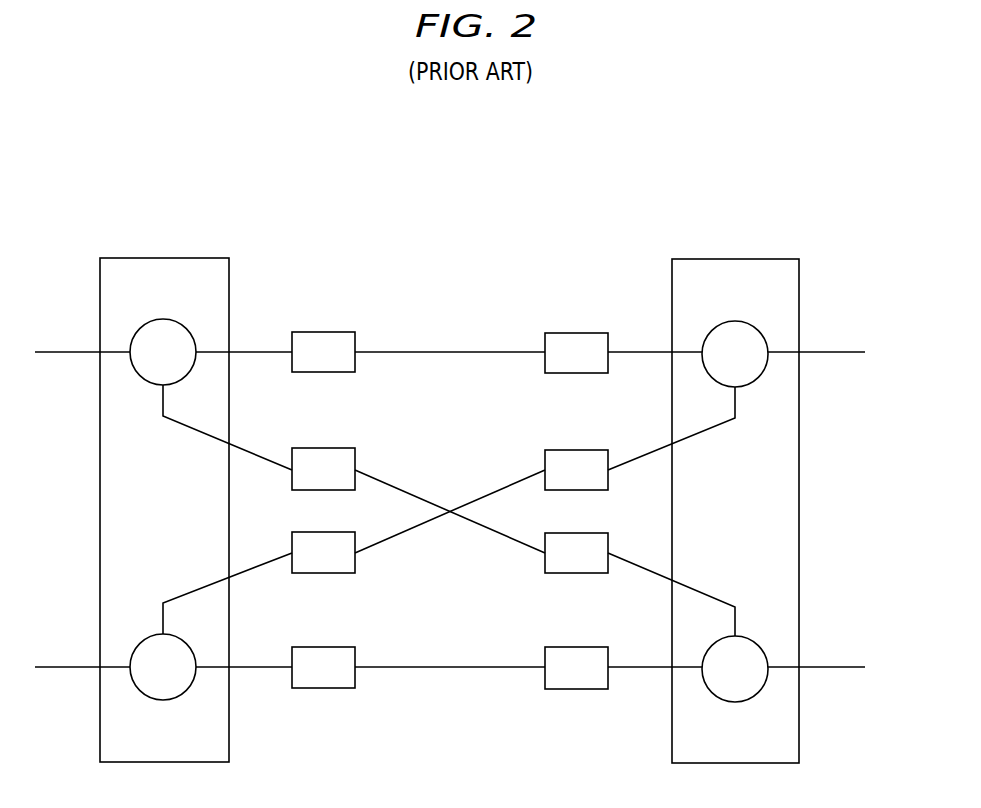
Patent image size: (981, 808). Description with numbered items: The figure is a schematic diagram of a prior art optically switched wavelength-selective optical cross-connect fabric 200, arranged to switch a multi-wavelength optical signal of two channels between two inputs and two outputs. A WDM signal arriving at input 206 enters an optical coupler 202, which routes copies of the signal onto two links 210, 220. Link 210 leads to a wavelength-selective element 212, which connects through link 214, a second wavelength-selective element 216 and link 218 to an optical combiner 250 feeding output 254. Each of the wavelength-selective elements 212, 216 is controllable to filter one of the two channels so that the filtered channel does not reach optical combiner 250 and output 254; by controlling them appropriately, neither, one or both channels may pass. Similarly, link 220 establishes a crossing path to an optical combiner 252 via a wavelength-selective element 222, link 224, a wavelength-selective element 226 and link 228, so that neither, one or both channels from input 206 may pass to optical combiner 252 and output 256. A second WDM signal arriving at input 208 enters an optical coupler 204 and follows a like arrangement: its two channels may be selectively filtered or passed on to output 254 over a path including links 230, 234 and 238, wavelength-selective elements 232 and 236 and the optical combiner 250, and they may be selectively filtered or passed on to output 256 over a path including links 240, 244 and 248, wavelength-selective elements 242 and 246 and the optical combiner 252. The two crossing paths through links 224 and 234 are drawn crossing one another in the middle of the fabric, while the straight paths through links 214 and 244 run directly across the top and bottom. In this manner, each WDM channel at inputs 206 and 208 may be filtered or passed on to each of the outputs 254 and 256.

The wavelength-selective optical cross-connect fabric 200 is at (489, 127).
The optical coupler 202 is at (168, 320).
The optical coupler 204 is at (158, 701).
The input 206 is at (63, 350).
The input 208 is at (73, 665).
The link 210 is at (258, 350).
The wavelength-selective element 212 is at (322, 331).
The link 214 is at (449, 350).
The second wavelength-selective element 216 is at (580, 332).
The link 218 is at (641, 350).
The link 220 is at (256, 453).
The wavelength-selective element 222 is at (321, 447).
The link 224 is at (410, 496).
The wavelength-selective element 226 is at (577, 574).
The link 228 is at (640, 565).
The link 230 is at (258, 563).
The wavelength-selective element 232 is at (322, 574).
The link 234 is at (400, 535).
The wavelength-selective element 236 is at (580, 449).
The link 238 is at (641, 456).
The link 240 is at (258, 665).
The wavelength-selective element 242 is at (323, 689).
The link 244 is at (463, 665).
The wavelength-selective element 246 is at (577, 690).
The link 248 is at (645, 665).
The optical combiner 250 is at (740, 321).
The optical combiner 252 is at (733, 703).
The output 254 is at (820, 350).
The output 256 is at (812, 666).